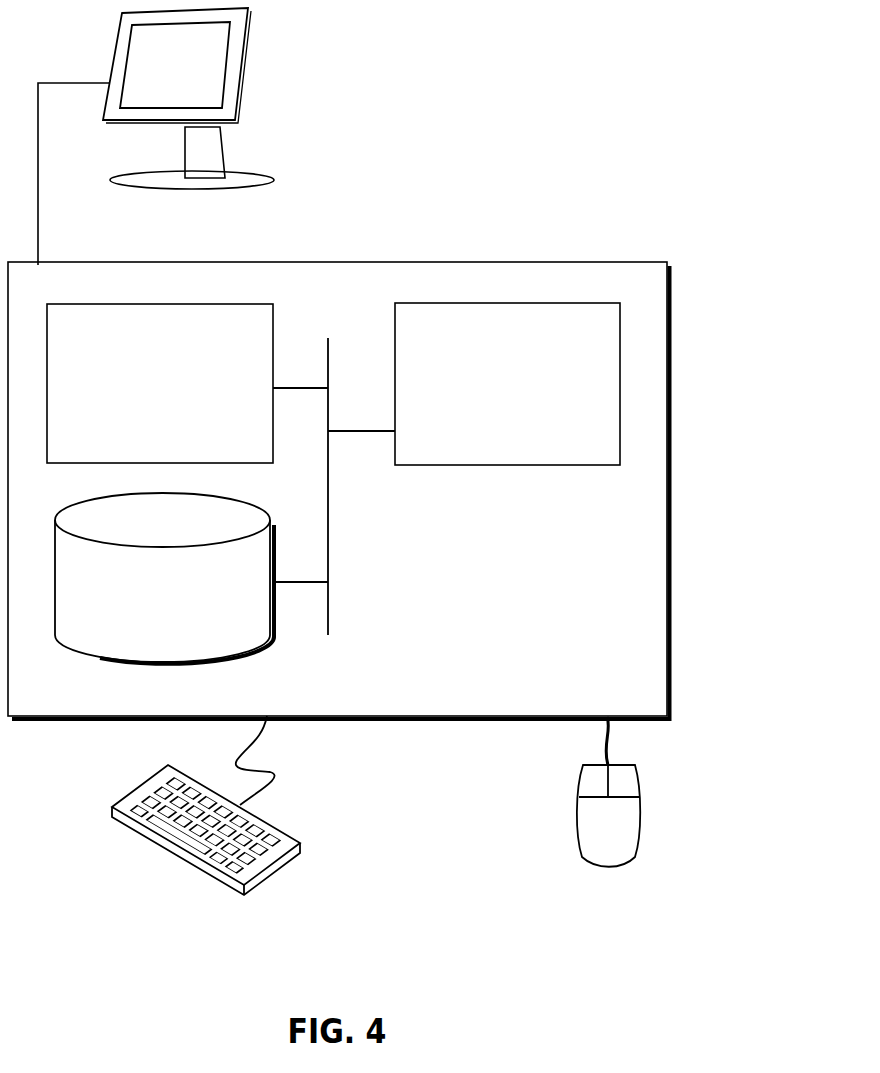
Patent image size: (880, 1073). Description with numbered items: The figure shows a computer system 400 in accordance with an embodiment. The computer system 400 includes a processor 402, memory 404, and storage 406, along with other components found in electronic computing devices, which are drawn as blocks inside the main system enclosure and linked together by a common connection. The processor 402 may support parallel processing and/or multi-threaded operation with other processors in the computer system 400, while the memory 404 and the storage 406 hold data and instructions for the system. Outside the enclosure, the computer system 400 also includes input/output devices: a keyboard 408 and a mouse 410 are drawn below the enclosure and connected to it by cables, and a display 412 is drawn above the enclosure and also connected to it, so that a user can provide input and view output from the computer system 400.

The computer system 400 is at (383, 240).
The processor 402 is at (507, 384).
The memory 404 is at (160, 383).
The storage 406 is at (164, 578).
The keyboard 408 is at (130, 827).
The mouse 410 is at (608, 792).
The display 412 is at (156, 136).